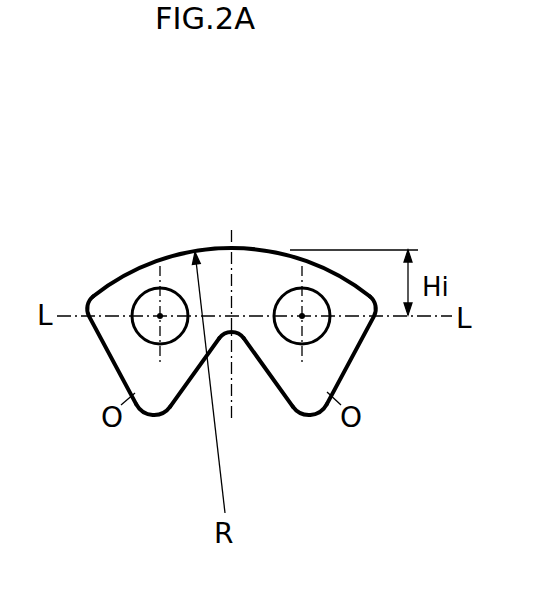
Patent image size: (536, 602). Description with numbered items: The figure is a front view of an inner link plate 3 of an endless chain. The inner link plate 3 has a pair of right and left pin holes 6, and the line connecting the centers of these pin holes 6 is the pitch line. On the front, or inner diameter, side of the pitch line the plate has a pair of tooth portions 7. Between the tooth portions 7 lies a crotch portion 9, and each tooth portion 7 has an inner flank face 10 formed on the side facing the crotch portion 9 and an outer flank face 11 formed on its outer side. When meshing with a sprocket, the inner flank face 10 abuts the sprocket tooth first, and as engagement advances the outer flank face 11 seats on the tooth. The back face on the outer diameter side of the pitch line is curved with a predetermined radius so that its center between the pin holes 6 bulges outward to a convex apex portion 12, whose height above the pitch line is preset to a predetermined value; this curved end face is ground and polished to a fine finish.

The inner link plate 3 is at (318, 192).
The convex apex portion 12 is at (234, 248).
The outer flank face 11 is at (108, 352).
The tooth portion 7 is at (160, 414).
The inner flank face 10 is at (195, 398).
The crotch portion 9 is at (245, 349).
The pin hole 6 is at (152, 300).